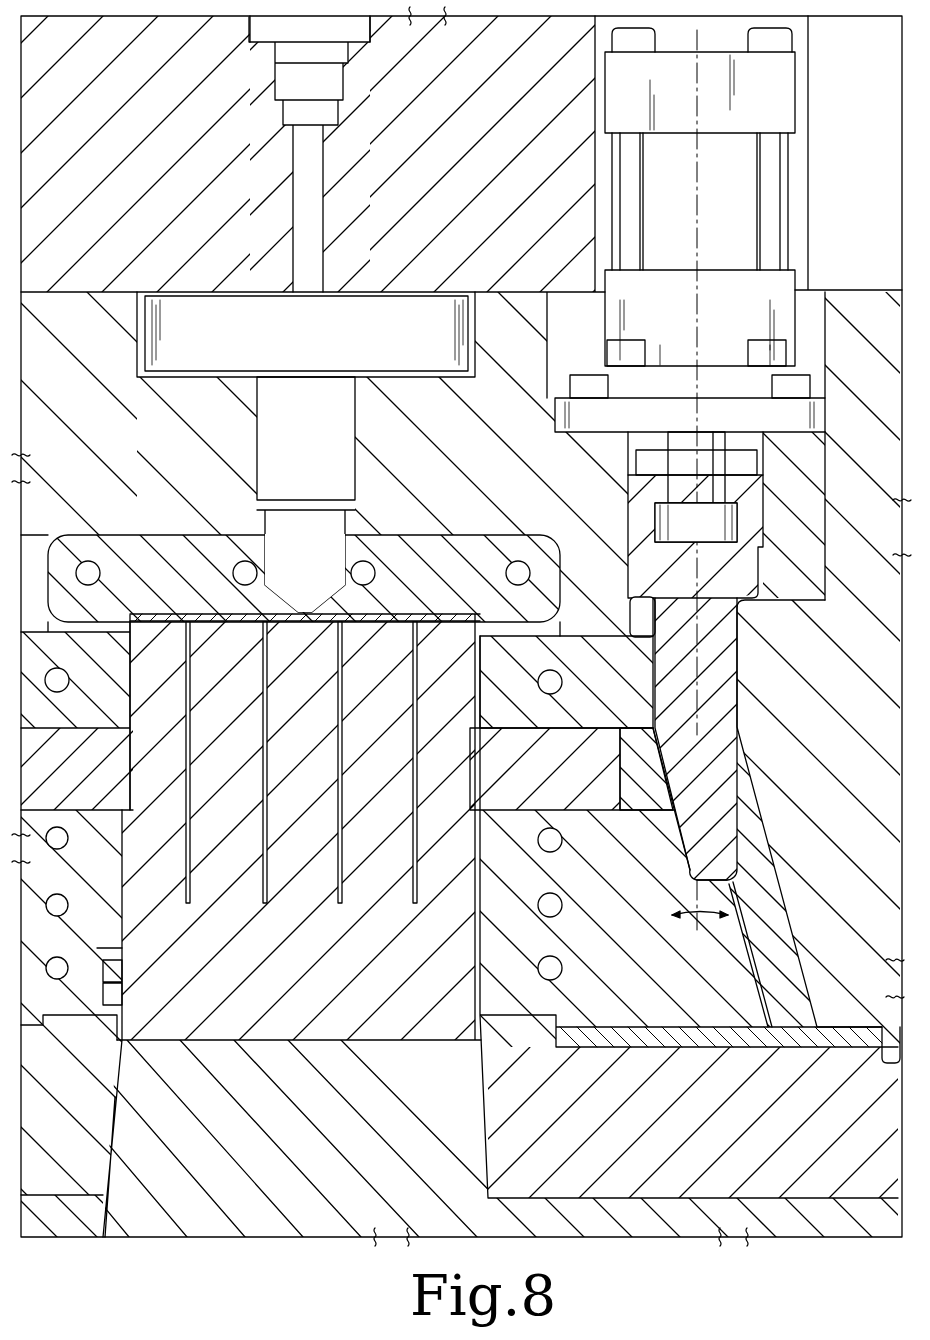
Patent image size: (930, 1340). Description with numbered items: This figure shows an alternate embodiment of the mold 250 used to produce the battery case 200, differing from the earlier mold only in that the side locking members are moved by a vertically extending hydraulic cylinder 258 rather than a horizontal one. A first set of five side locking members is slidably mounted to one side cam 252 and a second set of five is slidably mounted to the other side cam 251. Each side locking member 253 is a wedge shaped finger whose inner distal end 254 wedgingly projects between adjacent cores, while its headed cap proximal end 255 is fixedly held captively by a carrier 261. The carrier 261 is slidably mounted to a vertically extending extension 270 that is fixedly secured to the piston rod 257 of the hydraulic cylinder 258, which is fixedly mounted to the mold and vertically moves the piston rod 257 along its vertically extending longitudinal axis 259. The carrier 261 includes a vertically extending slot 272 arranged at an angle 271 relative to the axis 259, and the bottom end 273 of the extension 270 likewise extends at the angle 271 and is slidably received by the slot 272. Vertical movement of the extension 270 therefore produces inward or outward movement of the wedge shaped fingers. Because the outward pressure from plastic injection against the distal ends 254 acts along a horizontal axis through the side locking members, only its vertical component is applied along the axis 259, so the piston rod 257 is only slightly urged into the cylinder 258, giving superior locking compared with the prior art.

The battery case 200 is at (122, 917).
The mold 250 is at (410, 524).
The side cam 251 is at (527, 953).
The side cam 252 is at (99, 881).
The side locking members 253 is at (515, 806).
The inner distal ends 254 is at (480, 800).
The headed cap proximal ends 255 is at (597, 804).
The piston rod 257 is at (712, 470).
The hydraulic cylinder 258 is at (770, 325).
The longitudinal axis 259 is at (695, 565).
The carrier 261 is at (652, 802).
The extension 270 is at (190, 897).
The angle 271 is at (688, 914).
The slot 272 is at (673, 756).
The bottom end 273 is at (717, 868).